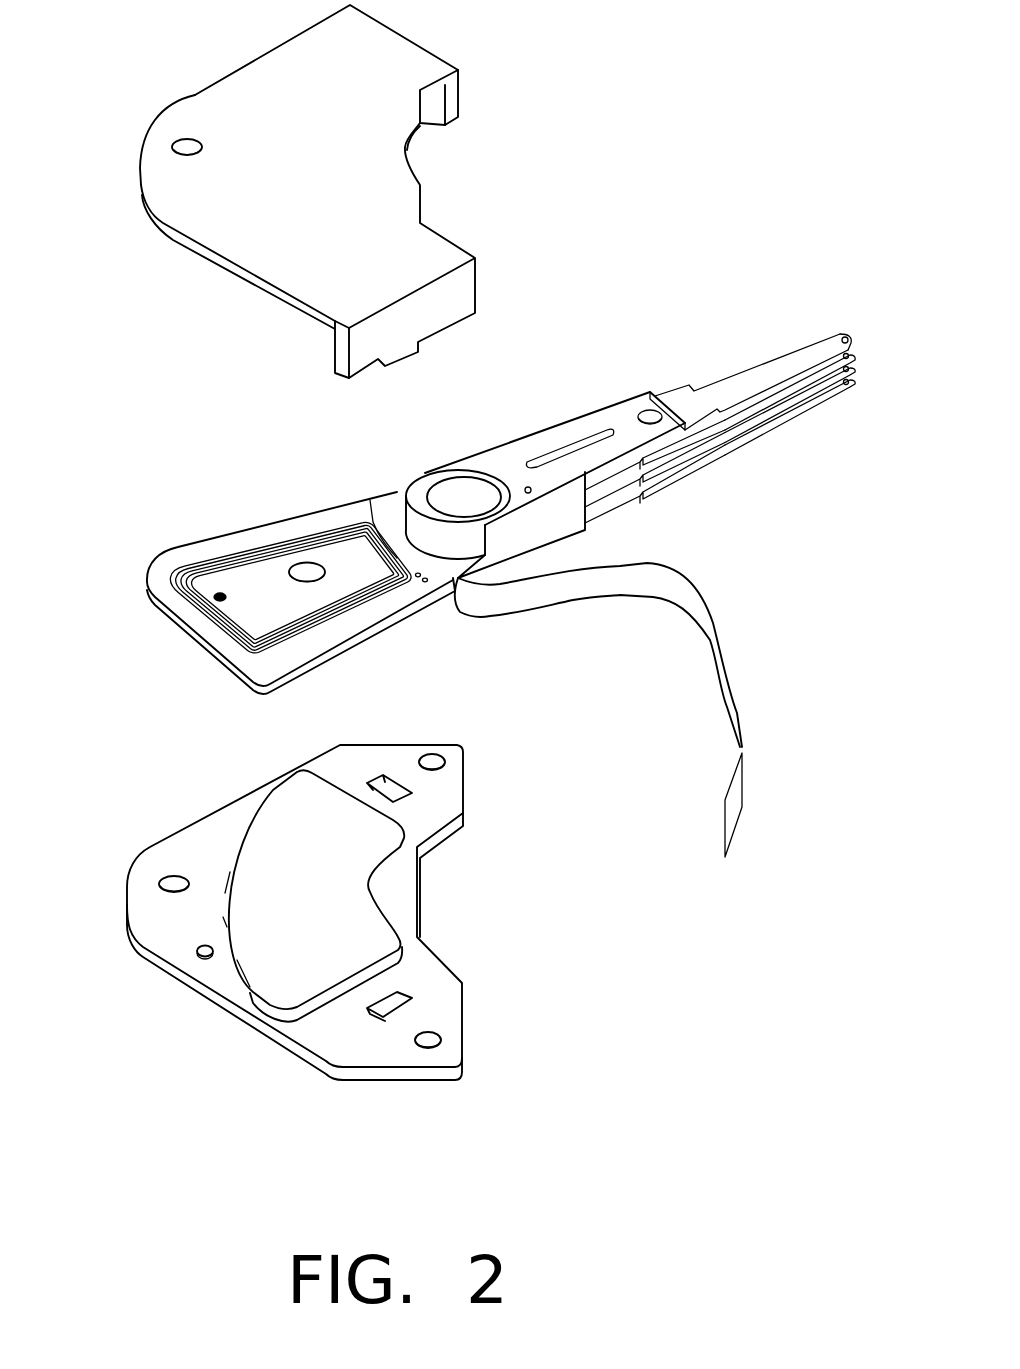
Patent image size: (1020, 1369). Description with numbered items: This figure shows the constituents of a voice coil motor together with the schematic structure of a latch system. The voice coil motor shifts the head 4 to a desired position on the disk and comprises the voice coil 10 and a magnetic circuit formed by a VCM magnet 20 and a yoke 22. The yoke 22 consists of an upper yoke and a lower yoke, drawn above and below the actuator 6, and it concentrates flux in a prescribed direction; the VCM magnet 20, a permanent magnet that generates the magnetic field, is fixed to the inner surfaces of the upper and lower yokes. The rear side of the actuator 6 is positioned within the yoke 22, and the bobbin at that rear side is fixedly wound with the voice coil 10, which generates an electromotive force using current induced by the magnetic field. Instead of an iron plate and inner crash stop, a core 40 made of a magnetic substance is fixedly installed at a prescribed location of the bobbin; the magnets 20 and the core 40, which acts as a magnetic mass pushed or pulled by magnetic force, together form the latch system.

The head 4 is at (820, 333).
The actuator 6 is at (538, 410).
The voice coil 10 is at (188, 606).
The VCM magnet 20 is at (350, 878).
The yoke 22 is at (222, 100).
The core 40 is at (220, 592).